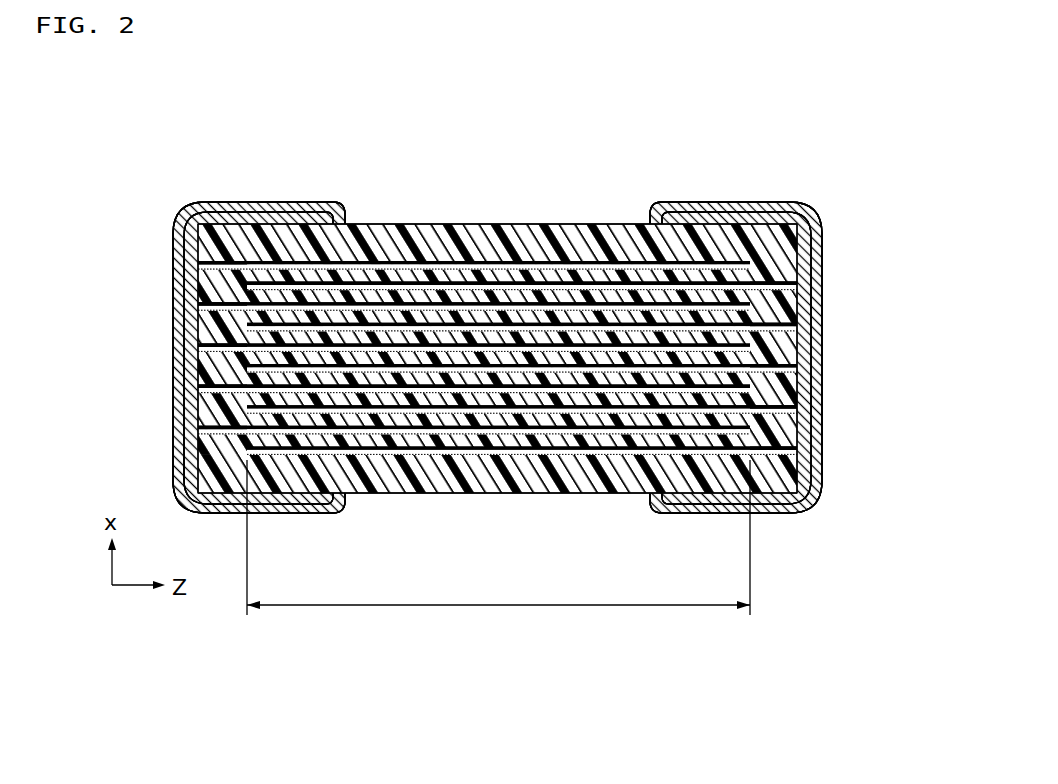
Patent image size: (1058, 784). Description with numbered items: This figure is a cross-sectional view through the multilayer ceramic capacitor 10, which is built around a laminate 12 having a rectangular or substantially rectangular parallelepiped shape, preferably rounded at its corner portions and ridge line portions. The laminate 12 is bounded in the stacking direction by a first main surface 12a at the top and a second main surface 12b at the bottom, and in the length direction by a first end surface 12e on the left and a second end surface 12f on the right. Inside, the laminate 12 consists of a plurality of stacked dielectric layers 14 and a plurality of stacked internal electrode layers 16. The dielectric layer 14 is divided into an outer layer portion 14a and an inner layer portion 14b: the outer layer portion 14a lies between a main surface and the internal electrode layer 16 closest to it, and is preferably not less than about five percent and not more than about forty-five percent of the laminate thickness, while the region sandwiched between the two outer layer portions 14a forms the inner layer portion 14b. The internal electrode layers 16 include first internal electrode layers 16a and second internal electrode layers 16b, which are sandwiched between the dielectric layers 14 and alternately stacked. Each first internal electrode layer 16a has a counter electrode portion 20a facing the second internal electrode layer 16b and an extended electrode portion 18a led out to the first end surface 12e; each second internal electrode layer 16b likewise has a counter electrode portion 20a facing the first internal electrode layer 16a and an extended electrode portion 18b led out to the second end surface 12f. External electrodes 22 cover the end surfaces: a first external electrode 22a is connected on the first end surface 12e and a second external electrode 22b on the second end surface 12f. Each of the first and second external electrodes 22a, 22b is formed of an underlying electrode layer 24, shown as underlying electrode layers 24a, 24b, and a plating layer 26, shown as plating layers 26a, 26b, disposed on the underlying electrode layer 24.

The multilayer ceramic capacitor 10 is at (380, 120).
The laminate 12 is at (499, 408).
The first main surface 12a is at (410, 224).
The second main surface 12b is at (410, 493).
The first end surface 12e is at (186, 327).
The second end surface 12f is at (806, 392).
The dielectric layer 14 is at (660, 143).
The outer layer portion 14a is at (596, 343).
The inner layer portion 14b is at (618, 364).
The internal electrode layer 16 is at (253, 650).
The first internal electrode layer 16a is at (388, 335).
The second internal electrode layer 16b is at (445, 335).
The extended electrode portion 18a is at (198, 304).
The extended electrode portion 18b is at (797, 364).
The counter electrode portion 20a is at (498, 537).
The external electrode 22 is at (397, 650).
The first external electrode 22a is at (313, 143).
The second external electrode 22b is at (823, 143).
The underlying electrode layer 24 is at (541, 650).
The underlying electrode layer 24a is at (272, 218).
The underlying electrode layer 24b is at (722, 218).
The plating layer 26 is at (685, 650).
The plating layer 26a is at (232, 210).
The plating layer 26b is at (780, 210).